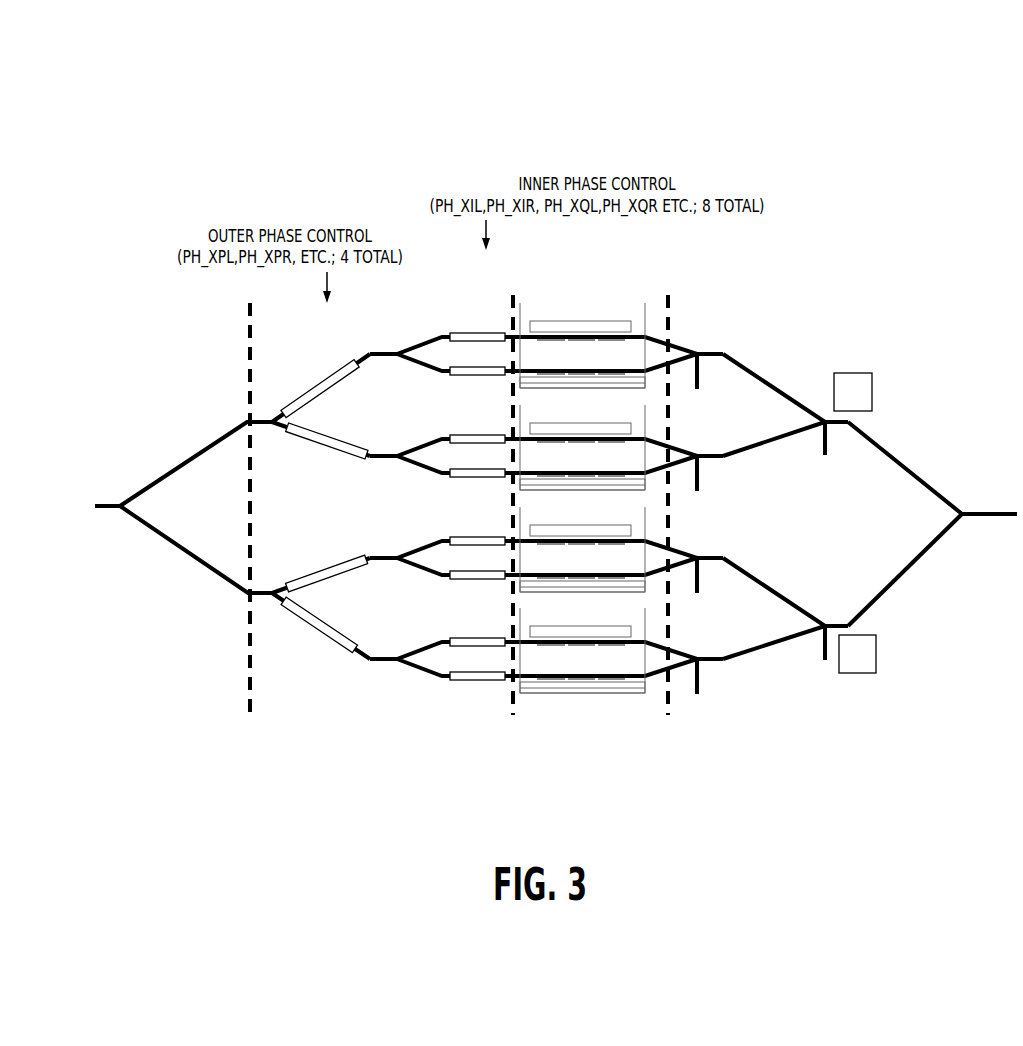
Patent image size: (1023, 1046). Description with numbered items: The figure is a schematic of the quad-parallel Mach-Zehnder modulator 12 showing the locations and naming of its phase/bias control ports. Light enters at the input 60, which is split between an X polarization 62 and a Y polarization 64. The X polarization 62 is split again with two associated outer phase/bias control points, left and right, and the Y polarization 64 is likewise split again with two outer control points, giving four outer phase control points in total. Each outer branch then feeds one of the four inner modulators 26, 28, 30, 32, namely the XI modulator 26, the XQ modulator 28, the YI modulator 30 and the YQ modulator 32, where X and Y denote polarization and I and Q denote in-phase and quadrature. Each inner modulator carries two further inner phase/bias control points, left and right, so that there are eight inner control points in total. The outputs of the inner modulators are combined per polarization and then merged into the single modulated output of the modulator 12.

The modulator 12 is at (722, 65).
The XI modulator 26 is at (418, 343).
The XQ modulator 28 is at (418, 445).
The YI modulator 30 is at (418, 547).
The YQ modulator 32 is at (418, 648).
The input 60 is at (110, 508).
The X polarization 62 is at (183, 552).
The Y polarization 64 is at (187, 463).